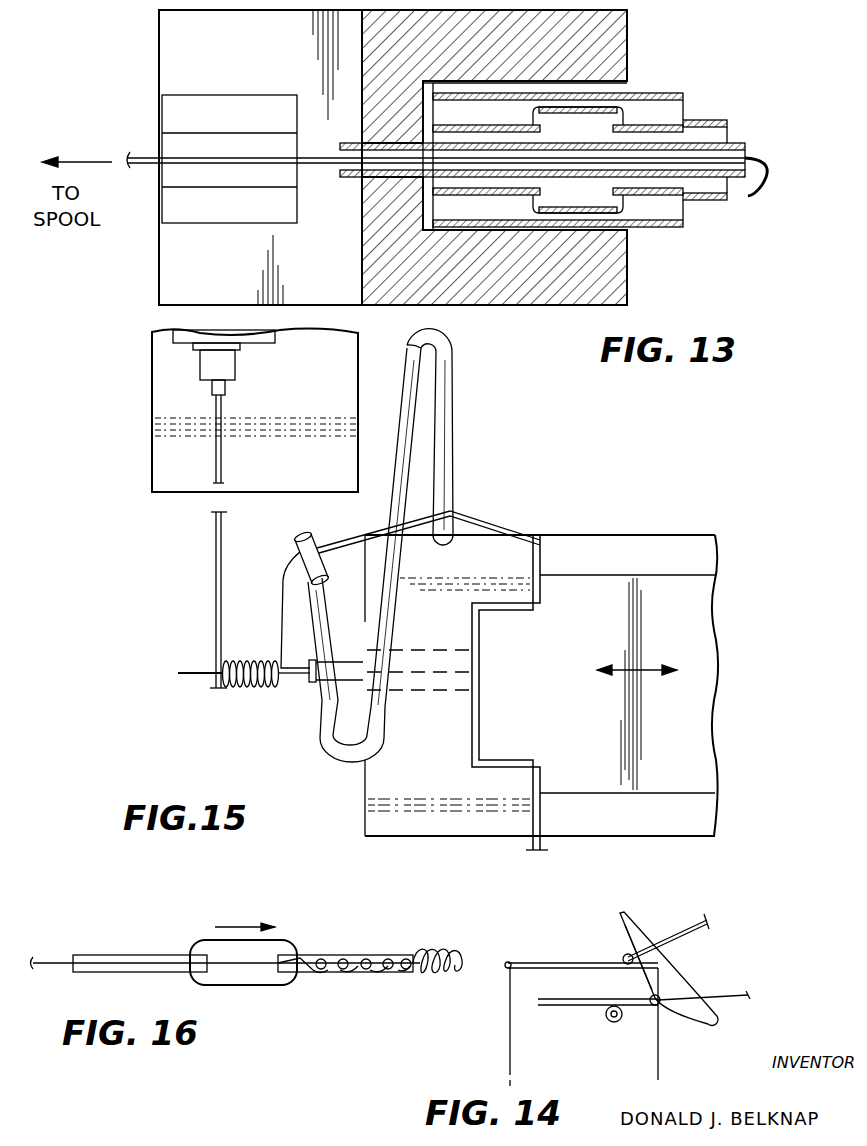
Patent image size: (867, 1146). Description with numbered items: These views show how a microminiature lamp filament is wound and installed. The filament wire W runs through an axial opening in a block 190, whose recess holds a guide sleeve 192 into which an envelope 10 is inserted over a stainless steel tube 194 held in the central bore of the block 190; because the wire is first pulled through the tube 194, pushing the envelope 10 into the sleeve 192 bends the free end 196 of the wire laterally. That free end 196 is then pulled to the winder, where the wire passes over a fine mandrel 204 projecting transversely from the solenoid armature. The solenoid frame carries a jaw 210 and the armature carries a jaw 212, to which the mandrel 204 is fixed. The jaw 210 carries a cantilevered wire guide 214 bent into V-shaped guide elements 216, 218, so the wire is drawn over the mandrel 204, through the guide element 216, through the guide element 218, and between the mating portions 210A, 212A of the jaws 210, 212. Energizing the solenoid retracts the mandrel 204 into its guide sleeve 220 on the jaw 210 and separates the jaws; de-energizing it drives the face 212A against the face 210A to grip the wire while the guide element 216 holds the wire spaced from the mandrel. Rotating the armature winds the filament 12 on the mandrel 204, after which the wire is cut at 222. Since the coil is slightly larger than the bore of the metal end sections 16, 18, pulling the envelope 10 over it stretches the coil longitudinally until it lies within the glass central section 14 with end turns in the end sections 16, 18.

In FIG. 13, the envelope 10 is at (713, 203).
In FIG. 15, the filament 12 is at (248, 690).
In FIG. 16, the filament 12 is at (440, 945).
In FIG. 13, the central section 14 is at (636, 90).
In FIG. 16, the central section 14 is at (290, 985).
In FIG. 13, the end section 16 is at (490, 120).
In FIG. 16, the end section 16 is at (140, 955).
In FIG. 13, the end section 18 is at (703, 120).
In FIG. 15, the end section 18 is at (222, 372).
In FIG. 16, the end section 18 is at (322, 957).
In FIG. 13, the block 190 is at (615, 52).
In FIG. 15, the block 190 is at (262, 338).
In FIG. 13, the guide sleeve 192 is at (648, 229).
In FIG. 15, the guide sleeve 192 is at (192, 352).
In FIG. 13, the stainless steel tube 194 is at (735, 137).
In FIG. 15, the stainless steel tube 194 is at (222, 415).
In FIG. 13, the free end 196 is at (770, 170).
In FIG. 15, the mandrel 204 is at (192, 668).
In FIG. 14, the mandrel 204 is at (612, 1022).
In FIG. 15, the jaw 210 is at (606, 560).
In FIG. 14, the jaw 210 is at (512, 1022).
In FIG. 15, the mating portion 210A is at (470, 750).
In FIG. 15, the jaw 212 is at (707, 583).
In FIG. 15, the mating portion 212A is at (478, 643).
In FIG. 15, the wire guide 214 is at (465, 425).
In FIG. 14, the wire guide 214 is at (677, 955).
In FIG. 15, the guide element 216 is at (305, 530).
In FIG. 14, the guide element 216 is at (672, 1012).
In FIG. 15, the guide element 218 is at (452, 512).
In FIG. 14, the guide element 218 is at (607, 977).
In FIG. 15, the guide sleeve 220 is at (312, 682).
In FIG. 15, the cut location 222 is at (280, 613).
In FIG. 13, the wire W is at (142, 158).
In FIG. 15, the wire W is at (212, 540).
In FIG. 16, the wire W is at (55, 958).
In FIG. 14, the wire W is at (686, 930).